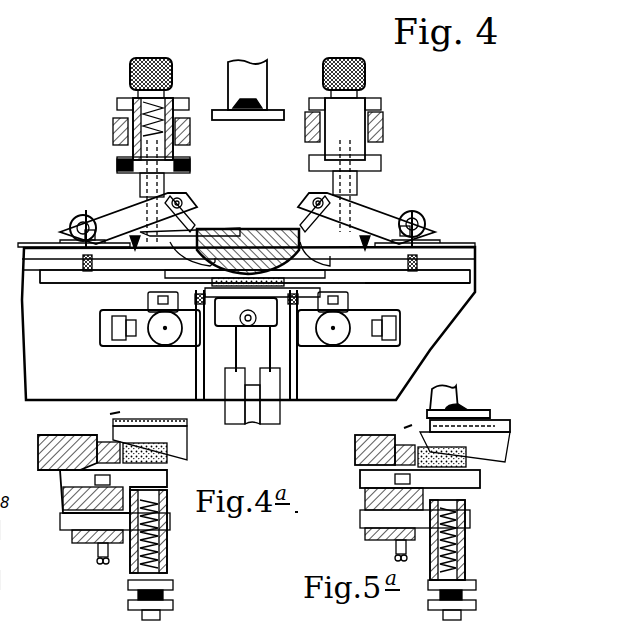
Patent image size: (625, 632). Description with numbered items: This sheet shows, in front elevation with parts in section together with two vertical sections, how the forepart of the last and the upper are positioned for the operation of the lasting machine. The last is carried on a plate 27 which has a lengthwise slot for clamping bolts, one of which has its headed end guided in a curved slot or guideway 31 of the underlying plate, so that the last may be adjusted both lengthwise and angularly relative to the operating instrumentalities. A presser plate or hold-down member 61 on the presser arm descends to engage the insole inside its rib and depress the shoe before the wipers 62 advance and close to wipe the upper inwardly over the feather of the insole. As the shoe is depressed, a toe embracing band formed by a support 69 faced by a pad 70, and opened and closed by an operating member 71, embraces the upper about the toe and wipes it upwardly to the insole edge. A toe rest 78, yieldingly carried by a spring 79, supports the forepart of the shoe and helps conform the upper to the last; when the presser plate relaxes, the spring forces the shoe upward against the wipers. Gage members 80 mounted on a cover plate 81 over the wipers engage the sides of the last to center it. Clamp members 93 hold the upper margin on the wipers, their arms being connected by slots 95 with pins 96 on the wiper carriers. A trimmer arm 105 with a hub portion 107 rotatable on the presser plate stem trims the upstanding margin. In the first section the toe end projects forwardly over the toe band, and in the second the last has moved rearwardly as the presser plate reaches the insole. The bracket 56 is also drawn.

In FIG. 4A, the plate 27 is at (0, 527).
In FIG. 4A, the curved slot or guideway 31 is at (0, 576).
In FIG. 4, the roller bracket 56 is at (226, 336).
In FIG. 4, the presser plate or hold-down member 61 is at (265, 121).
In FIG. 5A, the presser plate or hold-down member 61 is at (432, 399).
In FIG. 4A, the wipers 62 is at (82, 440).
In FIG. 5A, the wipers 62 is at (381, 433).
In FIG. 4A, the support 69 is at (63, 480).
In FIG. 5A, the support 69 is at (356, 452).
In FIG. 4, the pad 70 is at (203, 322).
In FIG. 4A, the pad 70 is at (125, 447).
In FIG. 5A, the pad 70 is at (420, 447).
In FIG. 5A, the operating member 71 is at (363, 486).
In FIG. 4, the toe rest 78 is at (282, 340).
In FIG. 4A, the toe rest 78 is at (166, 470).
In FIG. 5A, the toe rest 78 is at (470, 468).
In FIG. 4A, the spring 79 is at (133, 560).
In FIG. 5A, the spring 79 is at (466, 572).
In FIG. 4, the gage members 80 is at (300, 218).
In FIG. 4, the cover plate 81 is at (28, 247).
In FIG. 4A, the clamp members 93 is at (110, 412).
In FIG. 5A, the clamp members 93 is at (400, 426).
In FIG. 4, the slots 95 is at (72, 229).
In FIG. 4, the pins 96 is at (86, 222).
In FIG. 4, the arm 105 is at (246, 103).
In FIG. 5A, the arm 105 is at (470, 410).
In FIG. 4, the hub portion 107 is at (270, 78).